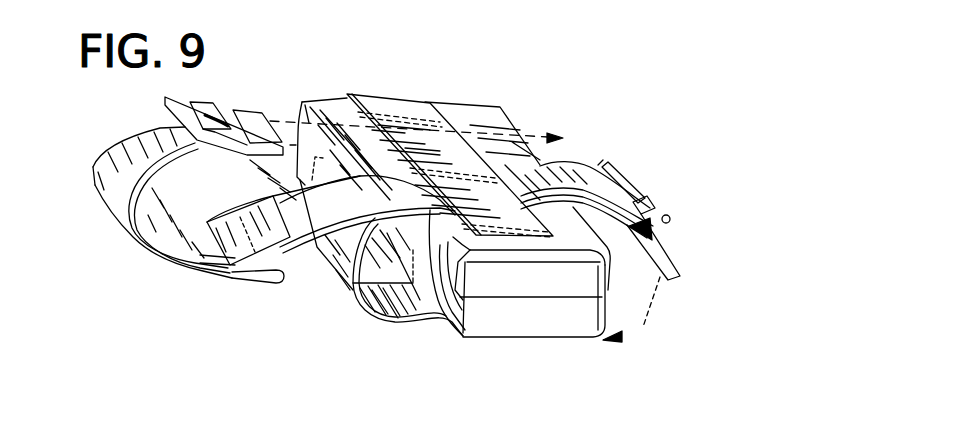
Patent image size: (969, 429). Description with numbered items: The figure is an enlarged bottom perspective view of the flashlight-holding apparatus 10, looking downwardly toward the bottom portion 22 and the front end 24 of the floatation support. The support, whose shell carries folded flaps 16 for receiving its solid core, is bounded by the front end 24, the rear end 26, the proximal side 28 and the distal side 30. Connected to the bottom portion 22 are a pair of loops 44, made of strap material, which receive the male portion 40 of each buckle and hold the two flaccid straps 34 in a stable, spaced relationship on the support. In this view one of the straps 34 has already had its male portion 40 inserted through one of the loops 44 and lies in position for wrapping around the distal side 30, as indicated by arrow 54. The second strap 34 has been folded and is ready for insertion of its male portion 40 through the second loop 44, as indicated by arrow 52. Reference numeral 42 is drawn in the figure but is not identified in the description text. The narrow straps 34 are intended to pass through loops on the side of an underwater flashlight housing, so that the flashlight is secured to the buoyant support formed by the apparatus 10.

The apparatus 10 is at (623, 80).
The folded flaps 16 is at (428, 307).
The bottom portion 22 is at (478, 122).
The front end 24 is at (518, 313).
The rear end 26 is at (330, 98).
The proximal side 28 is at (400, 263).
The distal side 30 is at (607, 288).
The flaccid straps 34 is at (140, 248).
The male portion 40 is at (247, 110).
The clasp 42 is at (235, 252).
The loops 44 is at (413, 120).
The arrow 52 is at (512, 128).
The arrow 54 is at (623, 337).